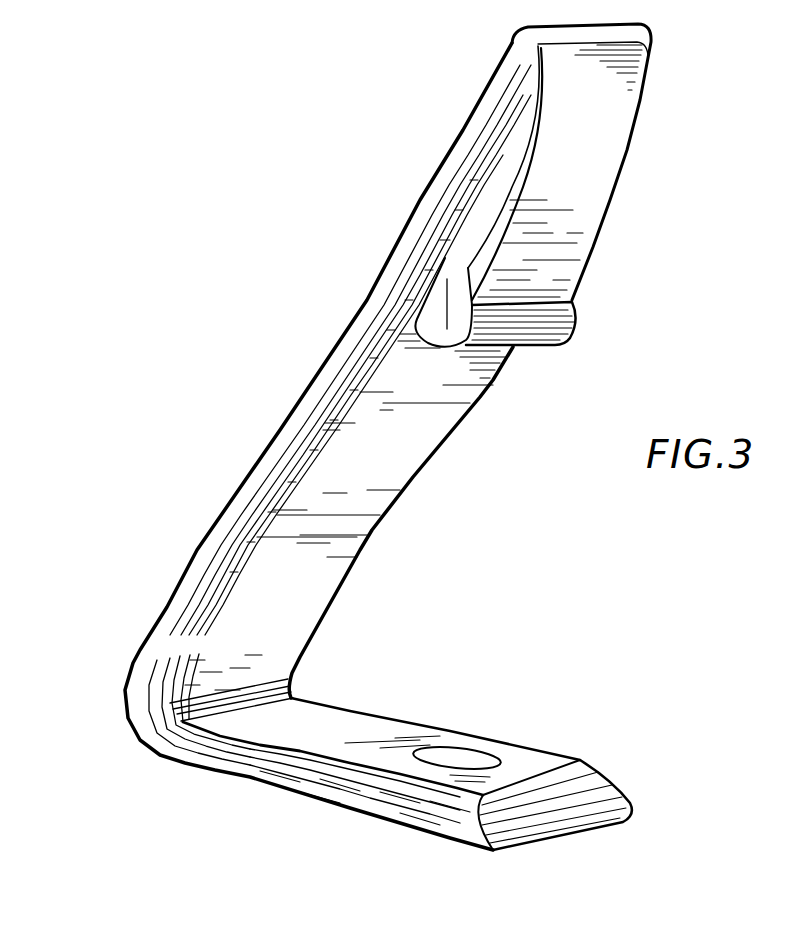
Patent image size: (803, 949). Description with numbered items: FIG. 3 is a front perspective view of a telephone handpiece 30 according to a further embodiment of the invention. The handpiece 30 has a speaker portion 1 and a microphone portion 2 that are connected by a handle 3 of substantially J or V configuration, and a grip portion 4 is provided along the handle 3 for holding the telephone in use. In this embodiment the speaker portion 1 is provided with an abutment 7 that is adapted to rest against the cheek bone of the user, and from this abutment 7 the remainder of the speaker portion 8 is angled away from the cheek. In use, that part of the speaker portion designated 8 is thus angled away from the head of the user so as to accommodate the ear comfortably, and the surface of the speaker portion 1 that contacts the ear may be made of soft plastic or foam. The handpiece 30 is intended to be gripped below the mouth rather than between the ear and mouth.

The speaker portion 1 is at (385, 40).
The microphone portion 2 is at (485, 860).
The handle 3 is at (285, 351).
The grip portion 4 is at (118, 661).
The abutment 7 is at (572, 312).
The remainder of the speaker portion 8 is at (627, 124).
The handpiece 30 is at (408, 530).